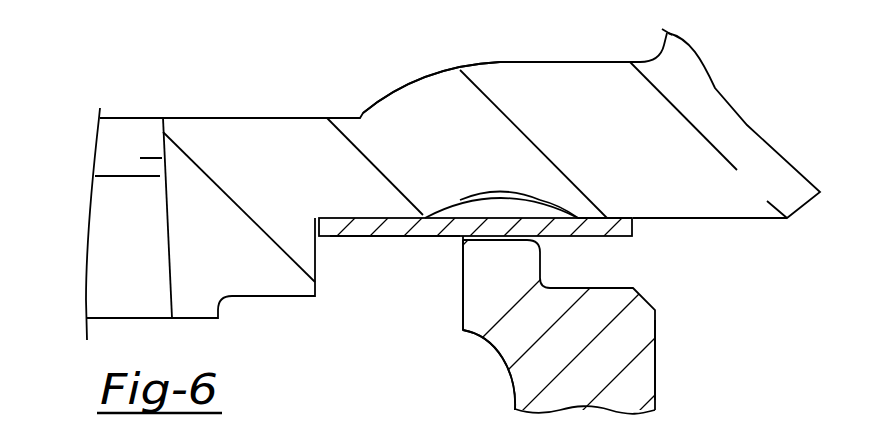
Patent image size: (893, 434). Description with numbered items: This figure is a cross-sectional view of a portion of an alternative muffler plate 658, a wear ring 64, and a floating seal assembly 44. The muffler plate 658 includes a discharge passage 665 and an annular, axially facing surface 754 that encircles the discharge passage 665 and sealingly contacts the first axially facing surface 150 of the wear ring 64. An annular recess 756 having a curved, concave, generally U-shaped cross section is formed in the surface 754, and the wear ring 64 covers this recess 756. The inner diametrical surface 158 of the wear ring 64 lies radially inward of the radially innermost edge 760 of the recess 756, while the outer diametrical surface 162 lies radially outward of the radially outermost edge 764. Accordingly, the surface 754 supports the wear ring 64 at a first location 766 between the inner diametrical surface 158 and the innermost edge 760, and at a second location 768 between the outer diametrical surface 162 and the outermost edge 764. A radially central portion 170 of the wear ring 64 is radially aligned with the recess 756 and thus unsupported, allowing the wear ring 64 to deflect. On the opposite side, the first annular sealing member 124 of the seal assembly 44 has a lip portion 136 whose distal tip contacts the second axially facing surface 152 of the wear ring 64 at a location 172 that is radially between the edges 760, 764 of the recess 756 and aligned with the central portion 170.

The muffler plate 658 is at (215, 114).
The discharge passage 665 is at (160, 158).
The inner diametrical surface 158 is at (317, 228).
The first location 766 is at (354, 218).
The radially innermost edge 760 is at (418, 218).
The radially central portion 170 is at (446, 218).
The first axially facing surface 150 is at (462, 218).
The annular recess 756 is at (488, 211).
The radially outermost edge 764 is at (577, 218).
The second location 768 is at (617, 218).
The outer diametrical surface 162 is at (637, 228).
The axially facing surface 754 is at (693, 218).
The wear ring 64 is at (544, 246).
The floating seal assembly 44 is at (660, 295).
The first annular sealing member 124 is at (643, 338).
The second axially facing surface 152 is at (399, 237).
The lip portion 136 is at (463, 272).
The location 172 is at (487, 240).